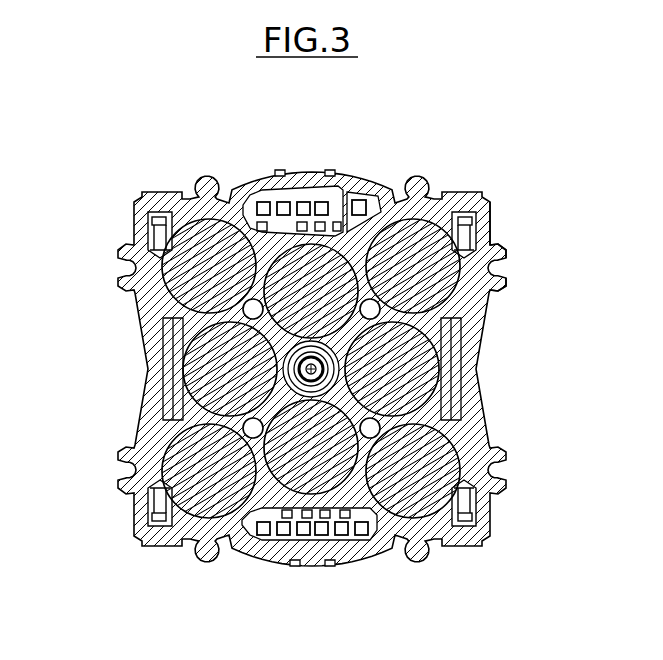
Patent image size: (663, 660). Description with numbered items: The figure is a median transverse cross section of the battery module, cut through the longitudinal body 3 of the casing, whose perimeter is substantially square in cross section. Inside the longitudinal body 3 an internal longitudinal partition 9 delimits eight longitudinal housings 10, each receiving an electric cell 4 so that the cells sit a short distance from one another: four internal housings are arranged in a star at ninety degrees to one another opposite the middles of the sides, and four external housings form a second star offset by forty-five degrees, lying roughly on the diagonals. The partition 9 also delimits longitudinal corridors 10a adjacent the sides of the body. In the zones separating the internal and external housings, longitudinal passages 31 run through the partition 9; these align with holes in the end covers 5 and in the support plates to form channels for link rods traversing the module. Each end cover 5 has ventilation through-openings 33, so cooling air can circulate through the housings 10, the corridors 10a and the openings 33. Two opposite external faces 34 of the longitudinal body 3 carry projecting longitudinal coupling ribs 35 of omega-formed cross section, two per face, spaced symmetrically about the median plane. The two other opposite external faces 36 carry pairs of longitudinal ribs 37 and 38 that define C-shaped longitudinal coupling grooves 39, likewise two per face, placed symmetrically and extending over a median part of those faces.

The longitudinal body 3 is at (133, 223).
The electric cell 4 is at (398, 377).
The end cover 5 is at (314, 542).
The internal longitudinal partition 9 is at (377, 520).
The longitudinal housing 10 is at (430, 498).
The longitudinal corridor 10a is at (268, 200).
The longitudinal passage 31 is at (378, 314).
The ventilation through-opening 33 is at (308, 208).
The external face 34 is at (352, 214).
The longitudinal coupling rib 35 is at (419, 182).
The external face 36 is at (491, 226).
The longitudinal rib 37 is at (505, 250).
The longitudinal rib 38 is at (505, 288).
The longitudinal coupling groove 39 is at (505, 268).